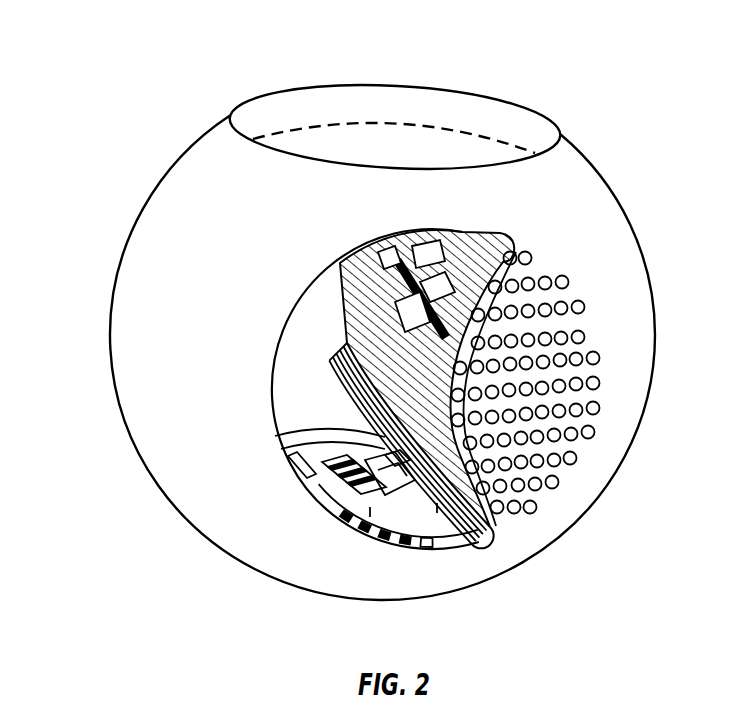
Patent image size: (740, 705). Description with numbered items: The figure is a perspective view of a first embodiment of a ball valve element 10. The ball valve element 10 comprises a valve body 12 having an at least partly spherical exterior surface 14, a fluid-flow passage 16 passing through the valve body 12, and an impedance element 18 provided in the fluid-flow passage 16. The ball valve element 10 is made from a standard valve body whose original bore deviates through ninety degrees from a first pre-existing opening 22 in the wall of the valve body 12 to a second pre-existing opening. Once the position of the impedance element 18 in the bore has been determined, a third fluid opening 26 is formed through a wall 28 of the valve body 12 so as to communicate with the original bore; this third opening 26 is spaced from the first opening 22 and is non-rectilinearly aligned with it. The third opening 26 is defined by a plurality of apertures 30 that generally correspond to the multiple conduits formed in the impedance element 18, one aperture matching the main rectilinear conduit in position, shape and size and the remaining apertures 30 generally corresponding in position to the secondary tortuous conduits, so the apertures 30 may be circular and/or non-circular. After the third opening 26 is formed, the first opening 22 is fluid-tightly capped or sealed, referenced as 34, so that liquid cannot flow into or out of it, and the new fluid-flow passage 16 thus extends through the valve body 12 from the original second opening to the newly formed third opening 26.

The ball valve element 10 is at (118, 60).
The valve body 12 is at (123, 255).
The partly spherical exterior surface 14 is at (580, 168).
The fluid-flow passage 16 is at (303, 345).
The impedance element 18 is at (430, 250).
The first opening 22 is at (507, 127).
The third fluid opening 26 is at (443, 540).
The wall 28 is at (433, 540).
The apertures 30 is at (556, 468).
The cap or seal 34 is at (337, 137).